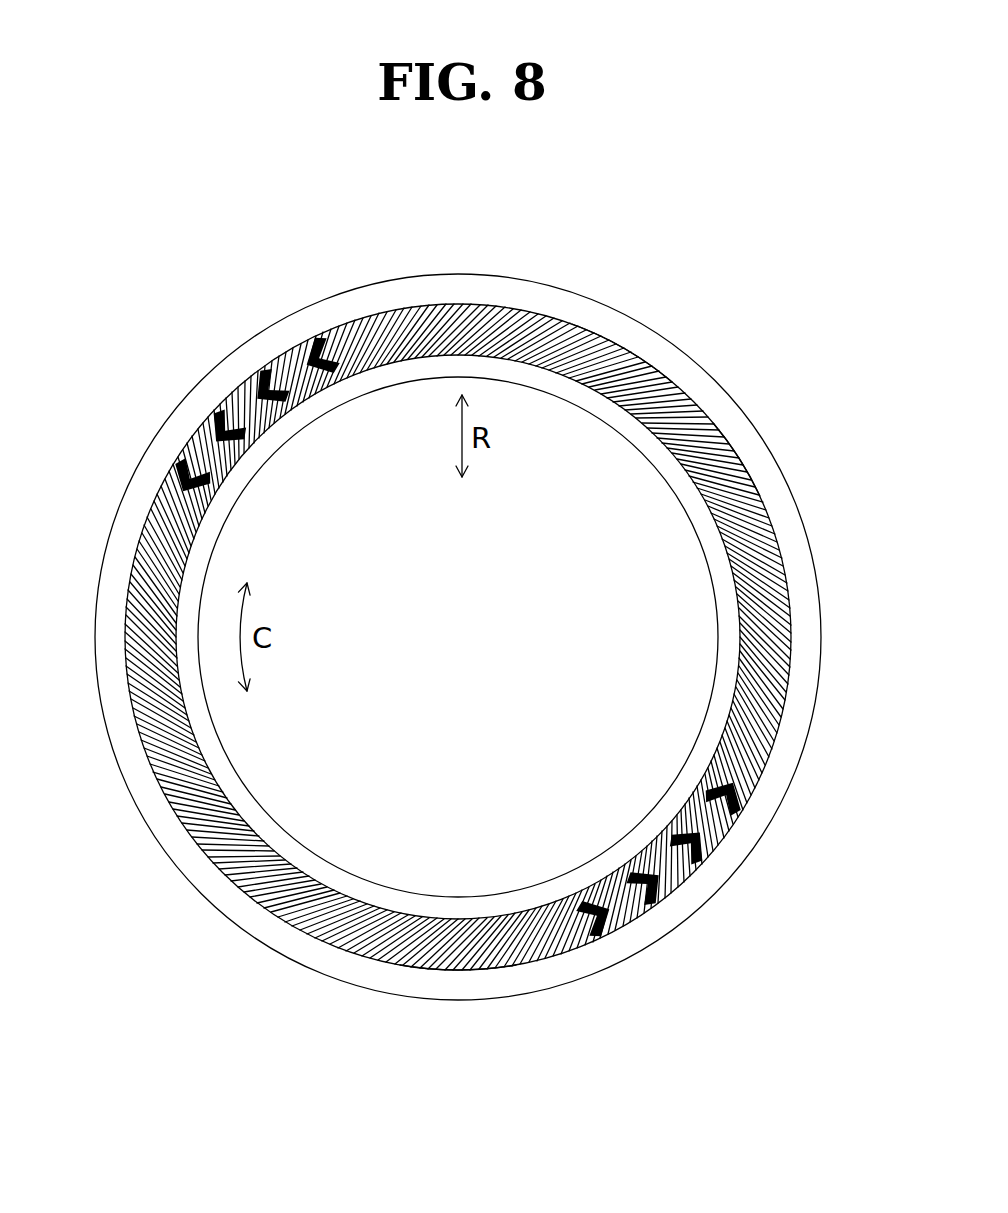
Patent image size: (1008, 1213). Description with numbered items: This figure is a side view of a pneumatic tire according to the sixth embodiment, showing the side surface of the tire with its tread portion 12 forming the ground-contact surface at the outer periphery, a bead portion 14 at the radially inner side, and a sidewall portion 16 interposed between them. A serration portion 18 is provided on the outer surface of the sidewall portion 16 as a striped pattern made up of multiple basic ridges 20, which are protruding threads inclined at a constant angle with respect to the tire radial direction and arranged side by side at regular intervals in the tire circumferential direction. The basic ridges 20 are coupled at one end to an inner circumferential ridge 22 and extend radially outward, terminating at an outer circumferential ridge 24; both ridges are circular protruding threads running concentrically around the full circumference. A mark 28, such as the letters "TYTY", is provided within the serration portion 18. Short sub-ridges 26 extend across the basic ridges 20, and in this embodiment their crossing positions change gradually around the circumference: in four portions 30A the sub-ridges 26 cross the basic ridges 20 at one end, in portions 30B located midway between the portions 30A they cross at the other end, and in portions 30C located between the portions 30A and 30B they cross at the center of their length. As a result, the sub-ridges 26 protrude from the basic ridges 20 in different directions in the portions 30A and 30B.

The tread portion 12 is at (172, 867).
The bead portion 14 is at (290, 830).
The sidewall portion 16 is at (265, 917).
The serration portion 18 is at (720, 427).
The basic ridge 20 is at (593, 340).
The inner circumferential ridge 22 is at (423, 918).
The outer circumferential ridge 24 is at (415, 968).
The sub-ridge 26 is at (640, 357).
The mark 28 is at (263, 368).
The portions where sub-ridges cross basic ridges at one end 30A is at (392, 305).
The portions where sub-ridges cross basic ridges at the other end 30B is at (673, 367).
The portions where sub-ridges cross basic ridges at the center 30C is at (287, 345).